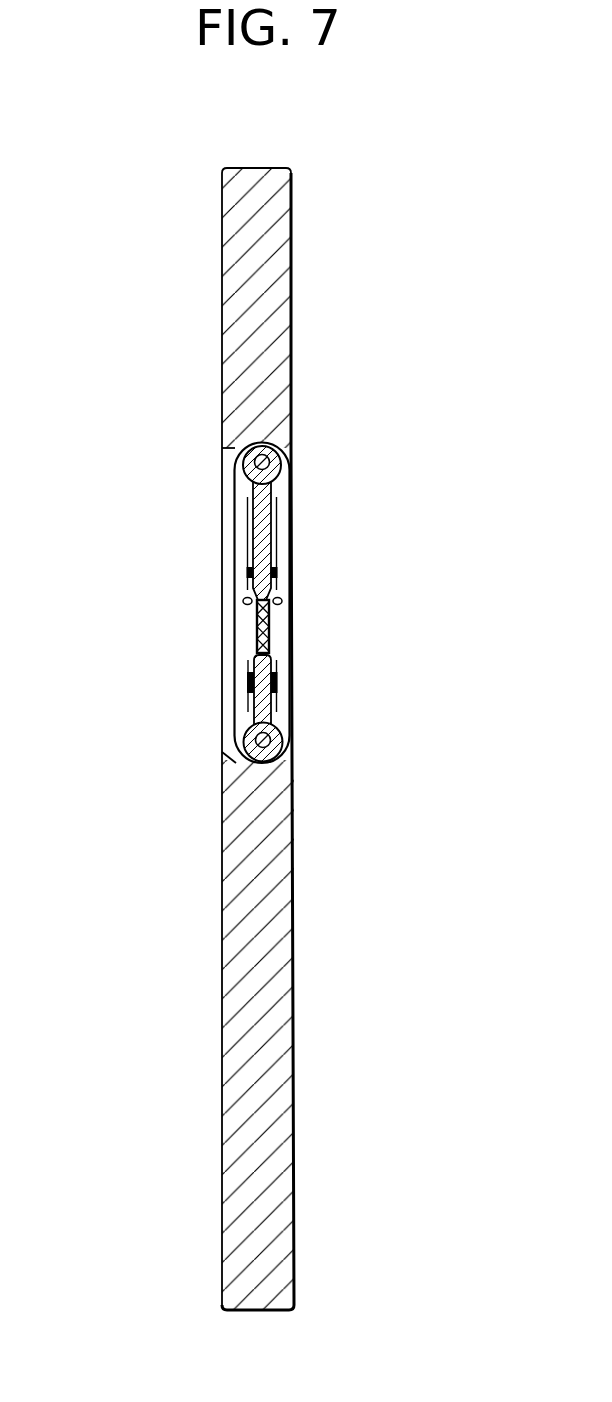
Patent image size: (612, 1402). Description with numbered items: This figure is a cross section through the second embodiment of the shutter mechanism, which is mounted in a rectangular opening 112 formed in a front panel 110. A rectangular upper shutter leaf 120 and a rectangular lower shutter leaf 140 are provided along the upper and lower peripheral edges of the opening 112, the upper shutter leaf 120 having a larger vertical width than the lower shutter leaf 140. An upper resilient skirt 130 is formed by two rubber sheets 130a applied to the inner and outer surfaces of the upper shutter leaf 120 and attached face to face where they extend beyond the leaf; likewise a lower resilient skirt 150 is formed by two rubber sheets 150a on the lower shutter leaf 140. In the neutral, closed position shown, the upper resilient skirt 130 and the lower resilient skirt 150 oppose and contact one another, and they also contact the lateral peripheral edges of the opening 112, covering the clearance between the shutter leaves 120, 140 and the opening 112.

The front panel 110 is at (272, 241).
The opening 112 is at (229, 707).
The upper shutter leaf 120 is at (256, 539).
The upper resilient skirt 130 is at (355, 562).
The rubber sheet 130a is at (278, 578).
The lower shutter leaf 140 is at (278, 705).
The lower resilient skirt 150 is at (169, 656).
The rubber sheet 150a is at (256, 653).